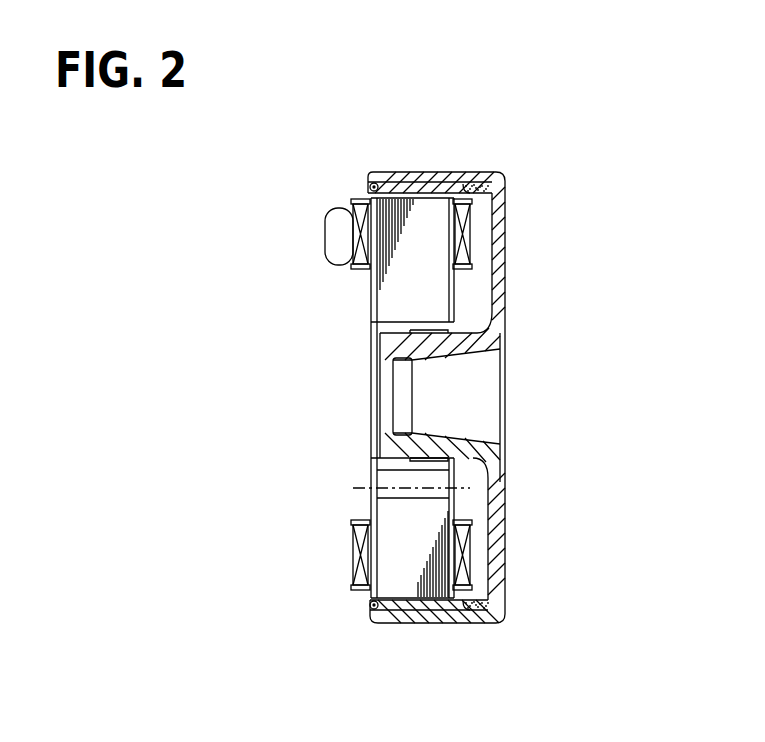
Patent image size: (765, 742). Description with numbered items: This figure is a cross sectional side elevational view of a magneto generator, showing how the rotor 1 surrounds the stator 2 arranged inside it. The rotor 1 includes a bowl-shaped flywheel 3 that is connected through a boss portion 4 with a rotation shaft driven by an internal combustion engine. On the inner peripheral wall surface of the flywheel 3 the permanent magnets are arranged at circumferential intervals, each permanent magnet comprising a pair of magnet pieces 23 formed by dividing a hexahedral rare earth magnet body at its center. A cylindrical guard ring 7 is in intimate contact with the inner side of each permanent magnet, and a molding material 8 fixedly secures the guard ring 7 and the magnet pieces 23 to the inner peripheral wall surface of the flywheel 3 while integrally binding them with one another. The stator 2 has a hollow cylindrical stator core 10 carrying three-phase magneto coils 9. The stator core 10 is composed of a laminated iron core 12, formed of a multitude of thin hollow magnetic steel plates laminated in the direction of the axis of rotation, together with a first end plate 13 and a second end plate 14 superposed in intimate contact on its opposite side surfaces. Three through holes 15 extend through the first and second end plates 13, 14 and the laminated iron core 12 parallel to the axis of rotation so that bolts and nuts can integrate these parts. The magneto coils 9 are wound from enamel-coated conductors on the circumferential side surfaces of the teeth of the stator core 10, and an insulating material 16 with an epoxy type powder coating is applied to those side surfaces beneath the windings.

The rotor 1 is at (512, 246).
The stator 2 is at (358, 299).
The flywheel 3 is at (505, 173).
The boss portion 4 is at (457, 345).
The guard ring 7 is at (447, 175).
The molding material 8 is at (477, 607).
The magneto coils 9 is at (355, 560).
The stator core 10 is at (408, 545).
The laminated iron core 12 is at (430, 297).
The first end plate 13 is at (360, 197).
The second end plate 14 is at (473, 203).
The through holes 15 is at (437, 483).
The insulating material 16 is at (355, 543).
The magnet pieces 23 is at (415, 187).